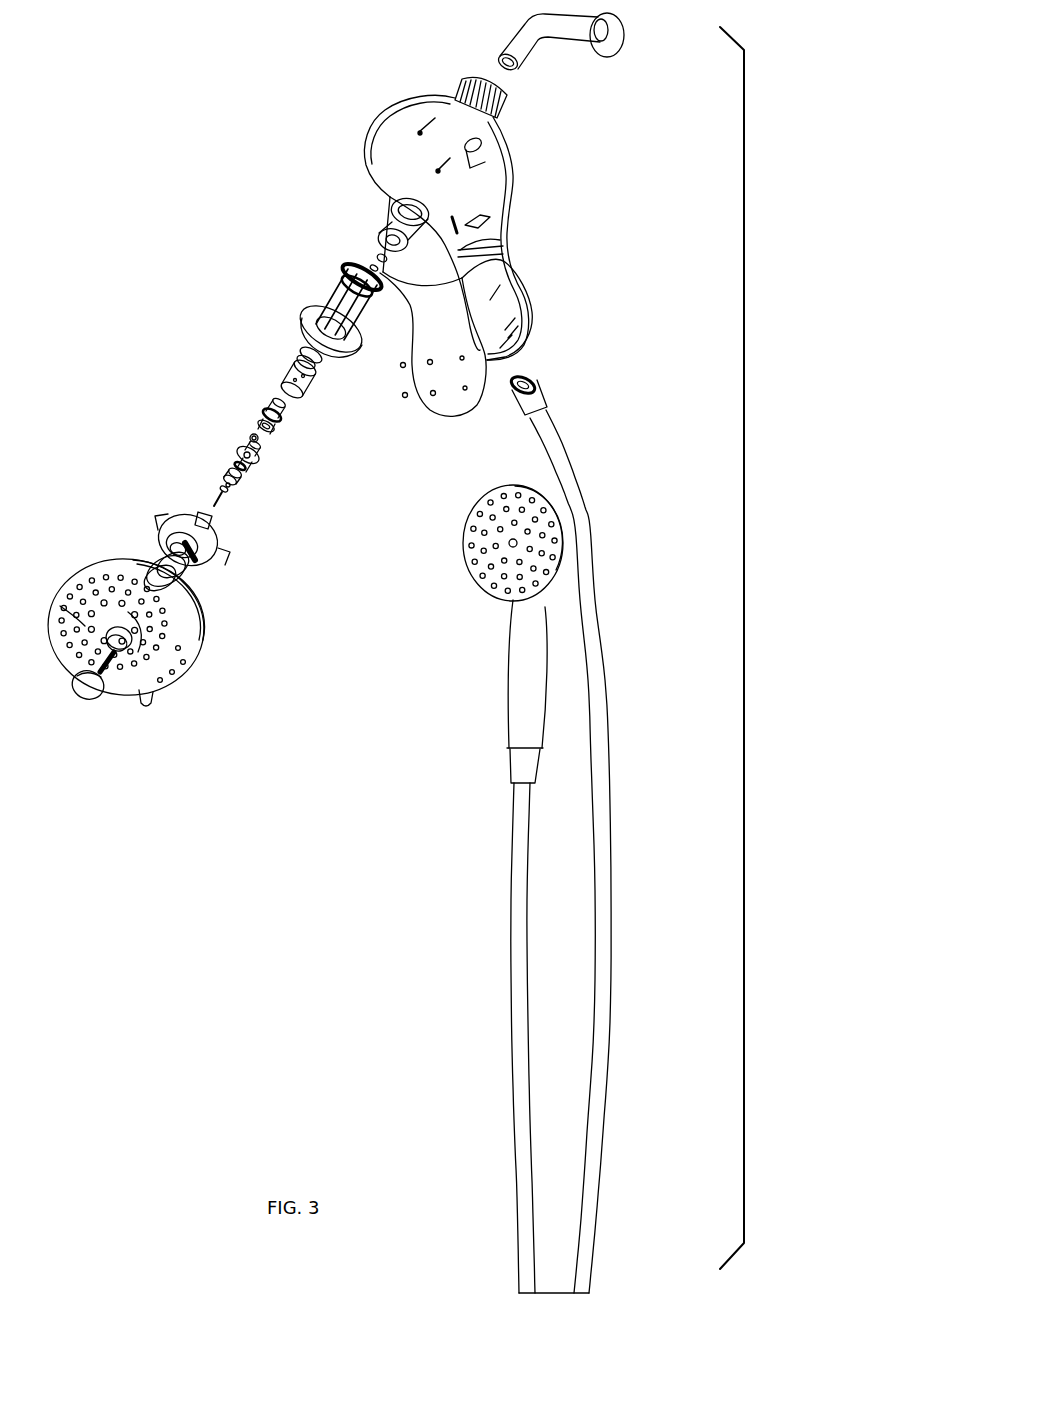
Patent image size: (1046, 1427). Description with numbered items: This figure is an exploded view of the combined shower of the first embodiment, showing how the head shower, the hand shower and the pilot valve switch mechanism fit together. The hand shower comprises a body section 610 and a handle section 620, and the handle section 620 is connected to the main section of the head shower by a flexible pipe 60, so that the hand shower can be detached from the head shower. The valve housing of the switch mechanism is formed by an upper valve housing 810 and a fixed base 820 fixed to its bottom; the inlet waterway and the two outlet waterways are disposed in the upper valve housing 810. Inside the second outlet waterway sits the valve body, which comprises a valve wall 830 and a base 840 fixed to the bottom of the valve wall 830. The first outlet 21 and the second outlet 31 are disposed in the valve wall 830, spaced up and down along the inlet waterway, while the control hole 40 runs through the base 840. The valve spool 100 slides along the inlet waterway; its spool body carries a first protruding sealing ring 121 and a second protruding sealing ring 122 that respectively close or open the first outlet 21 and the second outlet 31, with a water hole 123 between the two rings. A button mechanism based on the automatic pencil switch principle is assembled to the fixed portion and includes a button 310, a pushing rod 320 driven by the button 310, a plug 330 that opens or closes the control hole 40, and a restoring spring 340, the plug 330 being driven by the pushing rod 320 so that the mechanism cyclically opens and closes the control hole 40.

The upper valve housing 810 is at (335, 292).
The valve wall 830 is at (283, 373).
The second outlet 31 is at (293, 368).
The first outlet 21 is at (315, 367).
The valve spool 100 is at (244, 404).
The first protruding sealing ring 121 is at (282, 412).
The second protruding sealing ring 122 is at (275, 427).
The water hole 123 is at (280, 417).
The base 840 is at (240, 452).
The control hole 40 is at (247, 455).
The restoring spring 340 is at (235, 457).
The plug 330 is at (232, 472).
The pushing rod 320 is at (215, 493).
The fixed base 820 is at (158, 520).
The button 310 is at (85, 690).
The body section 610 is at (473, 568).
The handle section 620 is at (525, 685).
The flexible pipe 60 is at (593, 645).